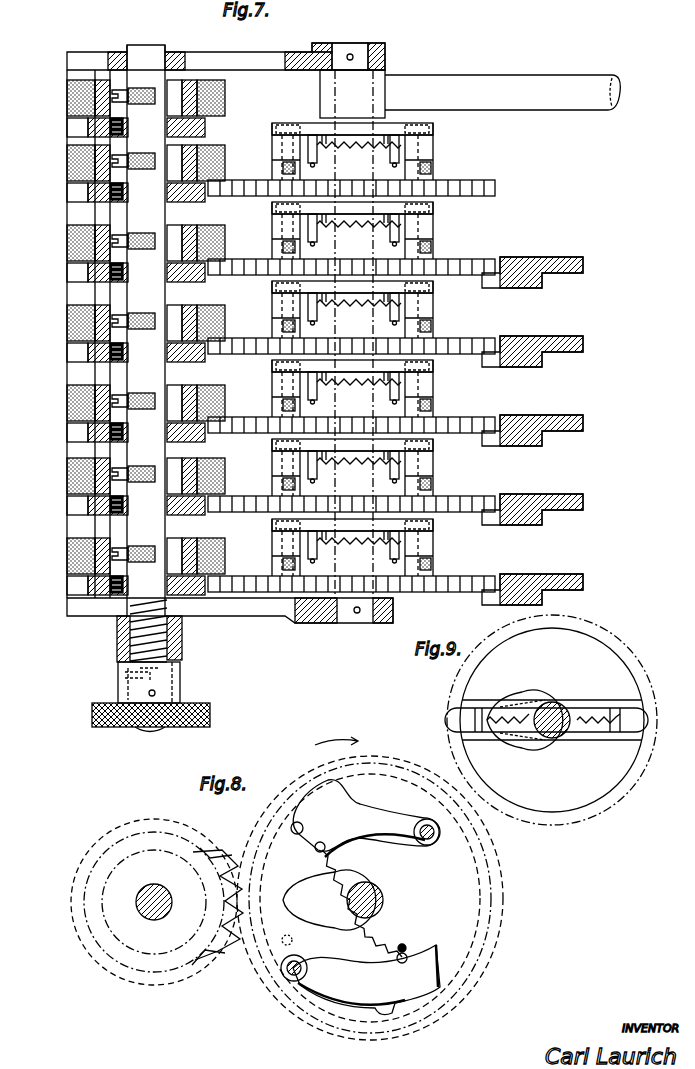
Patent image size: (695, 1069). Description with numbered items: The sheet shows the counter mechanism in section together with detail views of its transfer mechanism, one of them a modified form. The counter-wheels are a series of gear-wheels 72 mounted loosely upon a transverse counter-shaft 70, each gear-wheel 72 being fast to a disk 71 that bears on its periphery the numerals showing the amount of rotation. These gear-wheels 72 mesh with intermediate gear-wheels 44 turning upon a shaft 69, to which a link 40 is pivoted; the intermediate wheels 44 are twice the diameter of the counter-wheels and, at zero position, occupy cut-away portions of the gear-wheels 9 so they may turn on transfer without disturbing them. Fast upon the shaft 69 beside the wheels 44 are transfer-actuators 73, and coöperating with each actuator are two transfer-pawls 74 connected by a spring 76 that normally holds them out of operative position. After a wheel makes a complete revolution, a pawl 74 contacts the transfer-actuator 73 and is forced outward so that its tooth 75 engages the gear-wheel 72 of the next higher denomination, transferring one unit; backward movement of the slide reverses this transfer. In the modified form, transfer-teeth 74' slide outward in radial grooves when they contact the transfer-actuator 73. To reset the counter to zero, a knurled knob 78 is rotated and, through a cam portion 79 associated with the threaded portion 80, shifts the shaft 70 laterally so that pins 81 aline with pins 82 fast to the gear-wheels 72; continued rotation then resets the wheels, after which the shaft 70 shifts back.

In FIG. 7, the gear-wheel 9 is at (530, 257).
In FIG. 7, the link 40 is at (524, 80).
In FIG. 7, the intermediate gear-wheel 44 is at (455, 180).
In FIG. 8, the intermediate gear-wheel 44 is at (235, 978).
In FIG. 9, the intermediate gear-wheel 44 is at (580, 812).
In FIG. 7, the shaft 69 is at (375, 95).
In FIG. 8, the shaft 69 is at (378, 893).
In FIG. 9, the shaft 69 is at (558, 704).
In FIG. 7, the counter-shaft 70 is at (172, 147).
In FIG. 8, the counter-shaft 70 is at (158, 886).
In FIG. 7, the disk 71 is at (67, 97).
In FIG. 7, the gear-wheel 72 is at (72, 127).
In FIG. 8, the gear-wheel 72 is at (114, 972).
In FIG. 7, the transfer-actuator 73 is at (273, 136).
In FIG. 8, the transfer-actuator 73 is at (323, 922).
In FIG. 9, the transfer-actuator 73 is at (520, 745).
In FIG. 7, the transfer-pawl 74 is at (338, 478).
In FIG. 8, the transfer-pawl 74 is at (372, 916).
In FIG. 9, the transfer-tooth 74' is at (549, 720).
In FIG. 7, the tooth 75 is at (320, 132).
In FIG. 8, the tooth 75 is at (335, 790).
In FIG. 7, the spring 76 is at (352, 140).
In FIG. 8, the spring 76 is at (362, 940).
In FIG. 9, the spring 76 is at (598, 732).
In FIG. 7, the knurled knob 78 is at (118, 727).
In FIG. 7, the cam portion 79 is at (130, 678).
In FIG. 7, the screw 80 is at (130, 637).
In FIG. 7, the pin 81 is at (128, 92).
In FIG. 7, the pin 82 is at (118, 118).